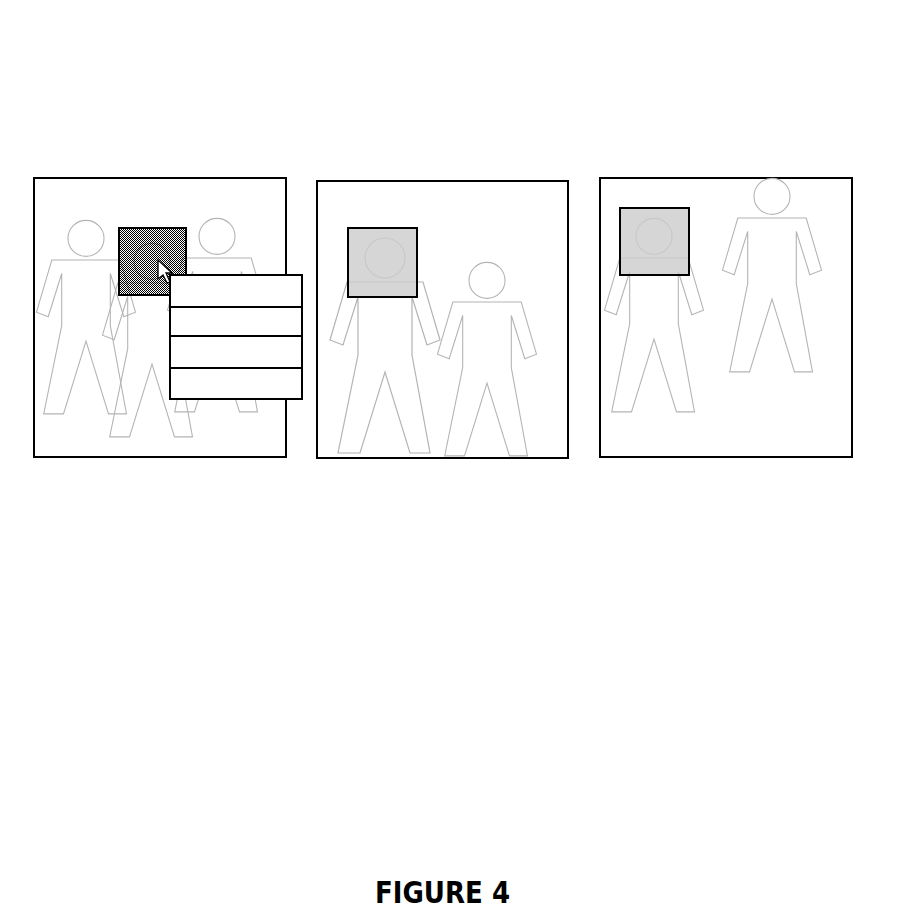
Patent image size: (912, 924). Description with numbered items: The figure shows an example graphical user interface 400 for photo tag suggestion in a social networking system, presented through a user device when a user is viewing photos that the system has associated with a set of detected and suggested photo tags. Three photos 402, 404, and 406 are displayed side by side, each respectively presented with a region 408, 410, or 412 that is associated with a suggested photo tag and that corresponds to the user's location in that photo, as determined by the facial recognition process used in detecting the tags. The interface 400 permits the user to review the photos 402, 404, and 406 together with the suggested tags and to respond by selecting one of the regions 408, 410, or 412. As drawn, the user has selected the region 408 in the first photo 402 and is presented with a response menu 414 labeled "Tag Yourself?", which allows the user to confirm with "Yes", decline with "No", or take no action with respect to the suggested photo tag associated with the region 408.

The graphical user interface 400 is at (467, 58).
The photo 402 is at (202, 178).
The photo 404 is at (483, 181).
The photo 406 is at (770, 178).
The region 408 is at (187, 228).
The region 410 is at (418, 229).
The region 412 is at (690, 208).
The response menu 414 is at (278, 275).